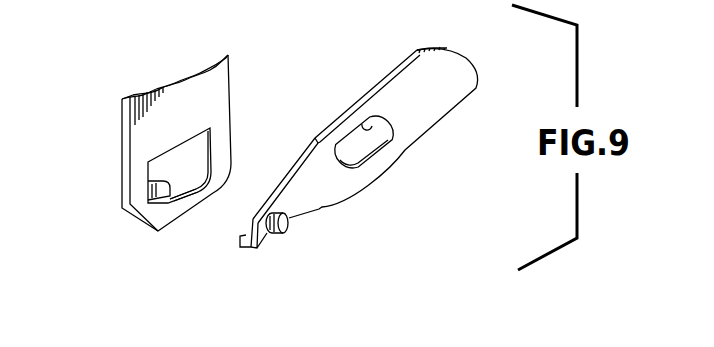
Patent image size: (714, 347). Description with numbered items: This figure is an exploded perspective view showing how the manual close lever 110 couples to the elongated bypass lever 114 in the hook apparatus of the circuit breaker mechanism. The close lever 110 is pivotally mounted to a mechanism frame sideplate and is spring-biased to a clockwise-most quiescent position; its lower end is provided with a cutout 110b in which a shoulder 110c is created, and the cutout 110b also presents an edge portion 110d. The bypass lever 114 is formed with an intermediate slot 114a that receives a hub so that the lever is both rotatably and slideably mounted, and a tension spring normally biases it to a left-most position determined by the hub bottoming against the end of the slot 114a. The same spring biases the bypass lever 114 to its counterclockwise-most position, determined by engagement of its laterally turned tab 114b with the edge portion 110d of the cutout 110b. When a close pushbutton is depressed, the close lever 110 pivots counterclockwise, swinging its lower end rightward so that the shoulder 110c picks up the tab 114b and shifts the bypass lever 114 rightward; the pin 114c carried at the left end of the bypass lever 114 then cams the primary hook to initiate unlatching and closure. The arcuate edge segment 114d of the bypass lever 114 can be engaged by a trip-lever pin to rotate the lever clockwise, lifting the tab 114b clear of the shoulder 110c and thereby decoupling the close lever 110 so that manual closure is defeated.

The close lever 110 is at (232, 86).
The cutout 110b is at (213, 155).
The shoulder 110c is at (148, 182).
The edge portion 110d is at (190, 201).
The bypass lever 114 is at (410, 146).
The intermediate slot 114a is at (372, 118).
The laterally turned tab 114b is at (242, 247).
The pin 114c is at (285, 226).
The arcuate edge segment 114d is at (443, 48).